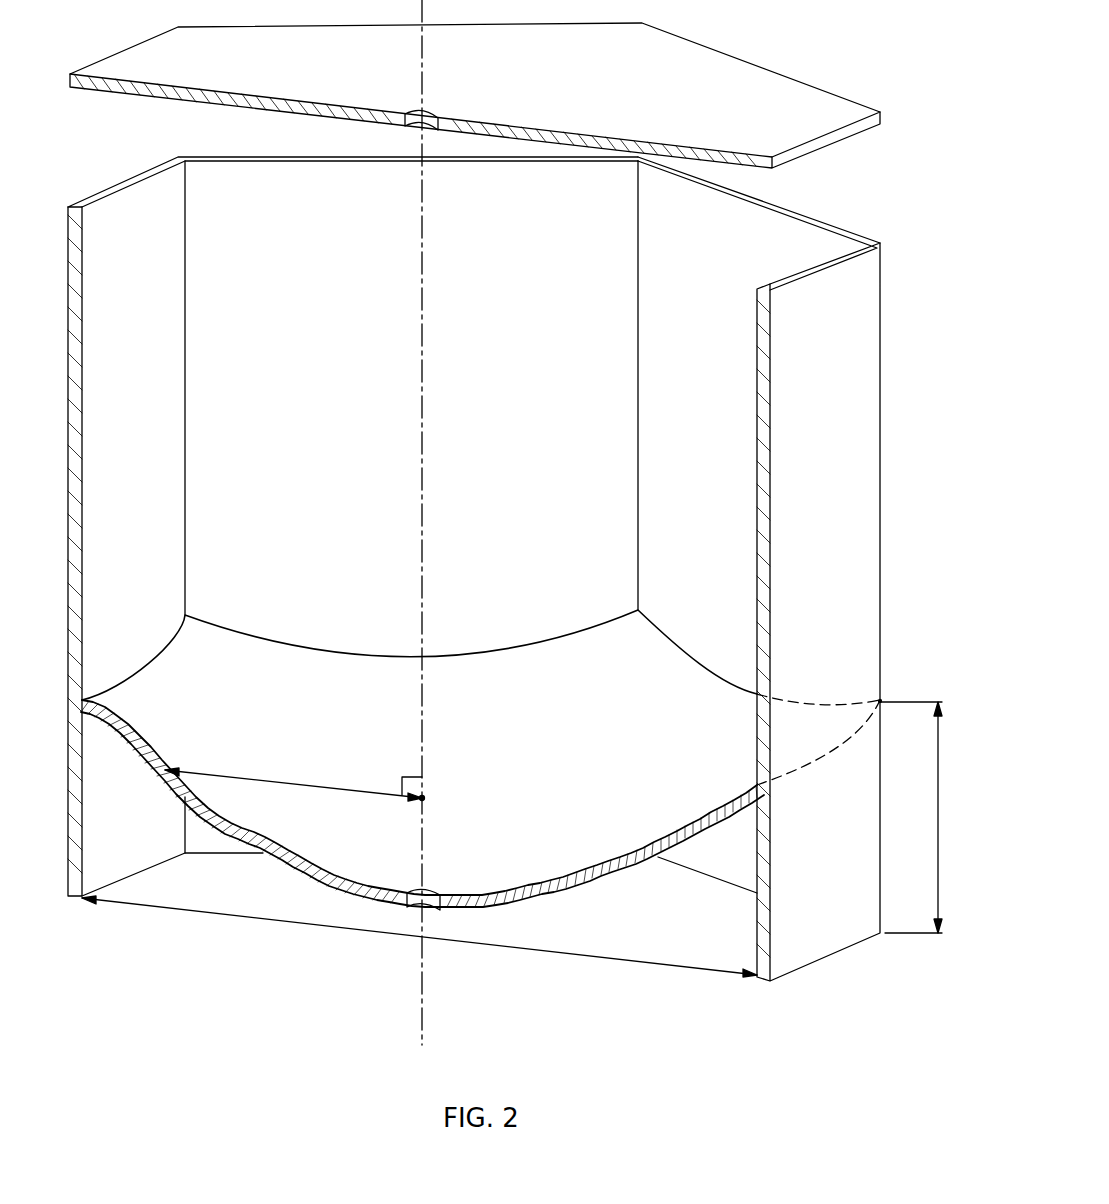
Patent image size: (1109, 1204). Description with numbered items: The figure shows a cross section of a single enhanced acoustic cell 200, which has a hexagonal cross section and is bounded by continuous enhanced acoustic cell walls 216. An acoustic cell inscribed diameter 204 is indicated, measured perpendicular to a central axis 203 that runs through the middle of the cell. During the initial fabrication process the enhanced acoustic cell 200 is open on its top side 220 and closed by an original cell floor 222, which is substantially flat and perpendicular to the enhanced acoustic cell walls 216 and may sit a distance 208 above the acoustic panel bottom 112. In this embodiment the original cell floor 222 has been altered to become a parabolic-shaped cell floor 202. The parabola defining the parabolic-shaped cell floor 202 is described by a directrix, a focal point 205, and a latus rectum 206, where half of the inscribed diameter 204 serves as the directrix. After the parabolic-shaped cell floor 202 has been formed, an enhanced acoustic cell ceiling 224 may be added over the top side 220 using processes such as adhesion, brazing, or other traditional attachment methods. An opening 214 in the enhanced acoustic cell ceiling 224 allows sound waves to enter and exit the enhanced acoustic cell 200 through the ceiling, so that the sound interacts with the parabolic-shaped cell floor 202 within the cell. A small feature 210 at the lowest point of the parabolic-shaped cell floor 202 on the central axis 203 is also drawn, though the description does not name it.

The acoustic panel bottom 112 is at (68, 898).
The enhanced acoustic cell 200 is at (898, 255).
The parabolic-shaped cell floor 202 is at (617, 862).
The central axis 203 is at (423, 1003).
The acoustic cell inscribed diameter 204 is at (200, 915).
The focal point 205 is at (424, 798).
The latus rectum 206 is at (285, 778).
The distance 208 is at (921, 817).
The panel notch 210 is at (415, 907).
The opening 214 is at (439, 113).
The enhanced acoustic cell walls 216 is at (882, 365).
The top side 220 is at (853, 230).
The original cell floor 222 is at (882, 702).
The enhanced acoustic cell ceiling 224 is at (805, 85).